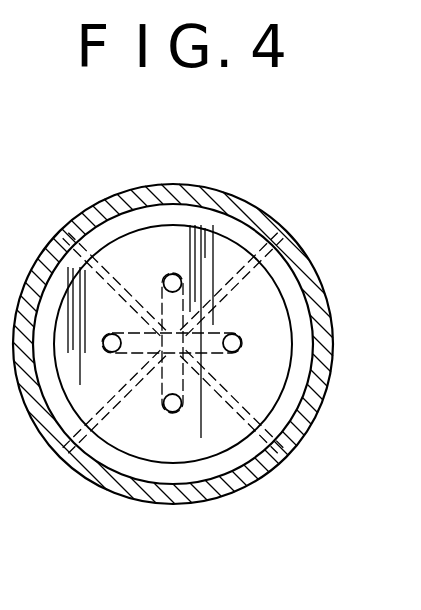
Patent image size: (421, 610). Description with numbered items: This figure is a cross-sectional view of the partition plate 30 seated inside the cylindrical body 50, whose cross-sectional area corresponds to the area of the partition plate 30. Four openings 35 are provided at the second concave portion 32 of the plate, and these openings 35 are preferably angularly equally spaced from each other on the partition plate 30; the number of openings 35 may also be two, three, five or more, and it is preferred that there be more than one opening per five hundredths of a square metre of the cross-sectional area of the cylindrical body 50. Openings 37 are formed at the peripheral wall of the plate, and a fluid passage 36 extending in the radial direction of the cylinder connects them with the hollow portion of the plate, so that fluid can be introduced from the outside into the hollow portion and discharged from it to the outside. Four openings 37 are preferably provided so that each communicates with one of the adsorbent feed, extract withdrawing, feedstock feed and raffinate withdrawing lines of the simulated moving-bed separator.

The partition plate 30 is at (315, 417).
The second concave portion 32 is at (219, 243).
The openings 35 is at (241, 341).
The fluid passage 36 is at (252, 285).
The openings 37 is at (280, 460).
The cylindrical body 50 is at (240, 490).